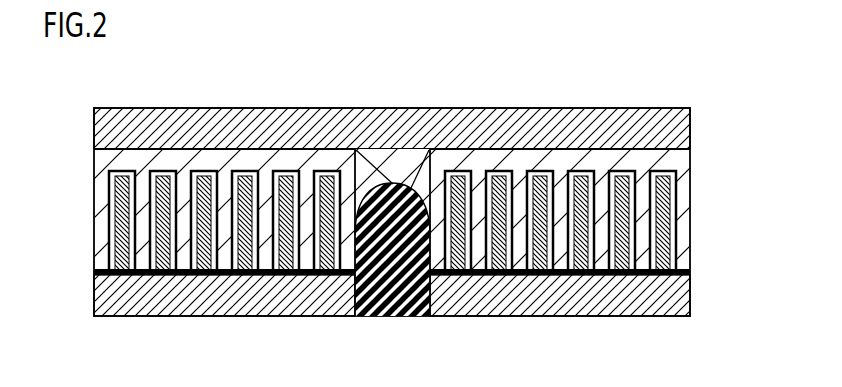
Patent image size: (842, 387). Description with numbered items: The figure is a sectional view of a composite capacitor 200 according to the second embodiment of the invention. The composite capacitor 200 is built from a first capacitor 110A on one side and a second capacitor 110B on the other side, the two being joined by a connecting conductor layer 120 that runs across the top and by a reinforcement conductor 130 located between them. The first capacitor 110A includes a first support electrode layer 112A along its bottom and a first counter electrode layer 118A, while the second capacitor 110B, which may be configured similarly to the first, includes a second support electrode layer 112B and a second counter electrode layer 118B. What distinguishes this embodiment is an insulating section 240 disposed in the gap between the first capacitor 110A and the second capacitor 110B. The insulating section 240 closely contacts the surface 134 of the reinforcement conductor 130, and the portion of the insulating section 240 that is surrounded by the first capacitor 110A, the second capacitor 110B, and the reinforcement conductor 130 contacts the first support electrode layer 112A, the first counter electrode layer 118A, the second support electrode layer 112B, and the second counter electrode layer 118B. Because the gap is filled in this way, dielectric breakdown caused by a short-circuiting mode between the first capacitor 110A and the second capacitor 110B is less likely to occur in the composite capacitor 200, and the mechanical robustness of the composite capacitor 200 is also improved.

The composite capacitor 200 is at (742, 86).
The connecting conductor layer 120 is at (226, 118).
The reinforcement conductor 130 is at (385, 162).
The surface 134 is at (372, 195).
The insulating section 240 is at (405, 273).
The first capacitor 110A is at (76, 157).
The second capacitor 110B is at (704, 151).
The first counter electrode layer 118A is at (110, 190).
The second counter electrode layer 118B is at (682, 213).
The first support electrode layer 112A is at (110, 300).
The second support electrode layer 112B is at (677, 300).